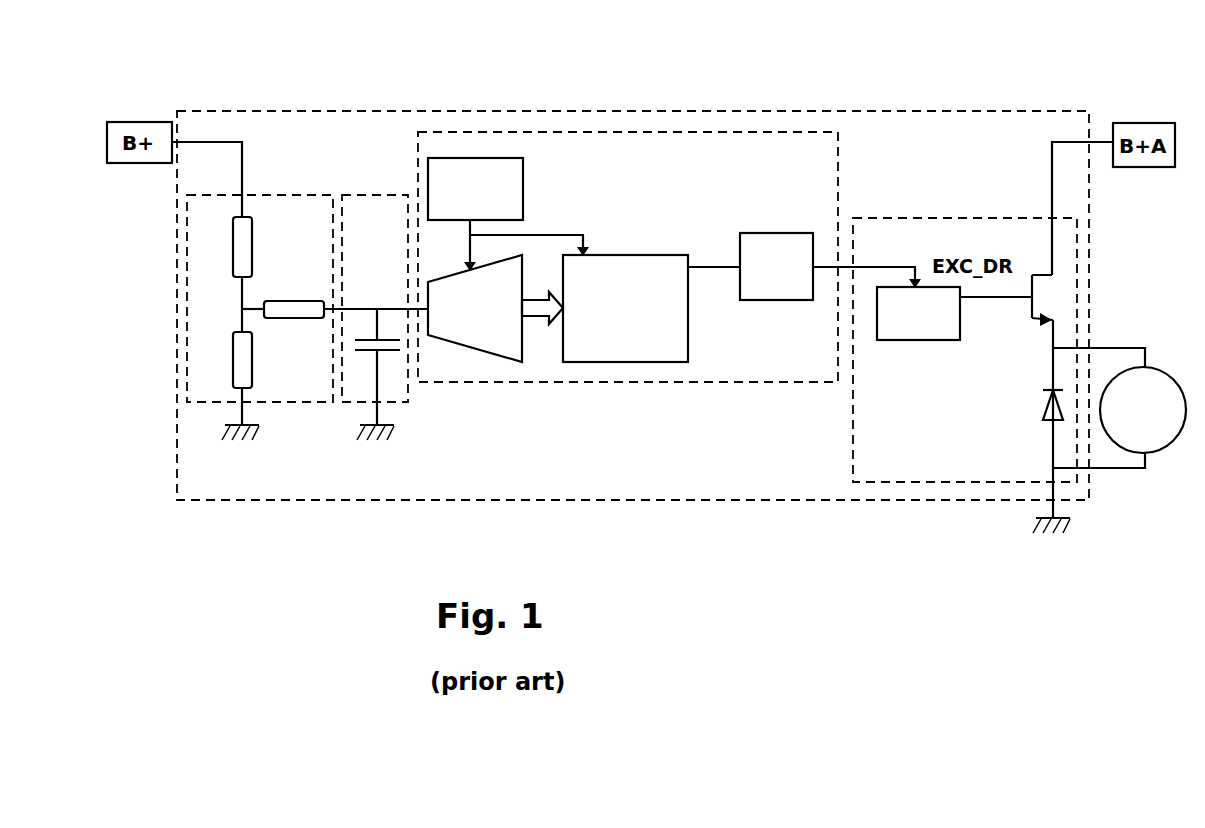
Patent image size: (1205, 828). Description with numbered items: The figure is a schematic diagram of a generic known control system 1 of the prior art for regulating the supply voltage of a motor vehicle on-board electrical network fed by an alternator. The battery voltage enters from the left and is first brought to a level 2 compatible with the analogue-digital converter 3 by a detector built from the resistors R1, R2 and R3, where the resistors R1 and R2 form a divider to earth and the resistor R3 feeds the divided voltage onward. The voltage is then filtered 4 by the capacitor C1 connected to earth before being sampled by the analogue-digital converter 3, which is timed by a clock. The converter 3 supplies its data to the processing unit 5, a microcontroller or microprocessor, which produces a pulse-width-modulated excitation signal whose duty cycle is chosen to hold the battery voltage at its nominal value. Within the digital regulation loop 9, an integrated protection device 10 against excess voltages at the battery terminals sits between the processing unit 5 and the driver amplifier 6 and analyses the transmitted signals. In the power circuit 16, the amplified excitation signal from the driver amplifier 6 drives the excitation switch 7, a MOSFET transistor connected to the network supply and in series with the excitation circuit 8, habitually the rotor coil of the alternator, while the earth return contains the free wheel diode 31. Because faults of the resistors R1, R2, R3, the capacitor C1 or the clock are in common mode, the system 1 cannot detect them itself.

The control system 1 is at (898, 110).
The level 2 is at (260, 280).
The analogue-digital converter 3 is at (470, 346).
The filter 4 is at (375, 299).
The processing unit 5 is at (688, 317).
The driver amplifier 6 is at (918, 340).
The excitation switch 7 is at (1038, 314).
The excitation circuit 8 is at (1172, 432).
The digital regulation loop 9 is at (628, 279).
The integrated protection device 10 is at (763, 300).
The power circuit 16 is at (973, 368).
The free wheel diode 31 is at (1043, 395).
The resistor R1 is at (224, 247).
The resistor R2 is at (224, 360).
The resistor R3 is at (294, 291).
The capacitor C1 is at (377, 345).